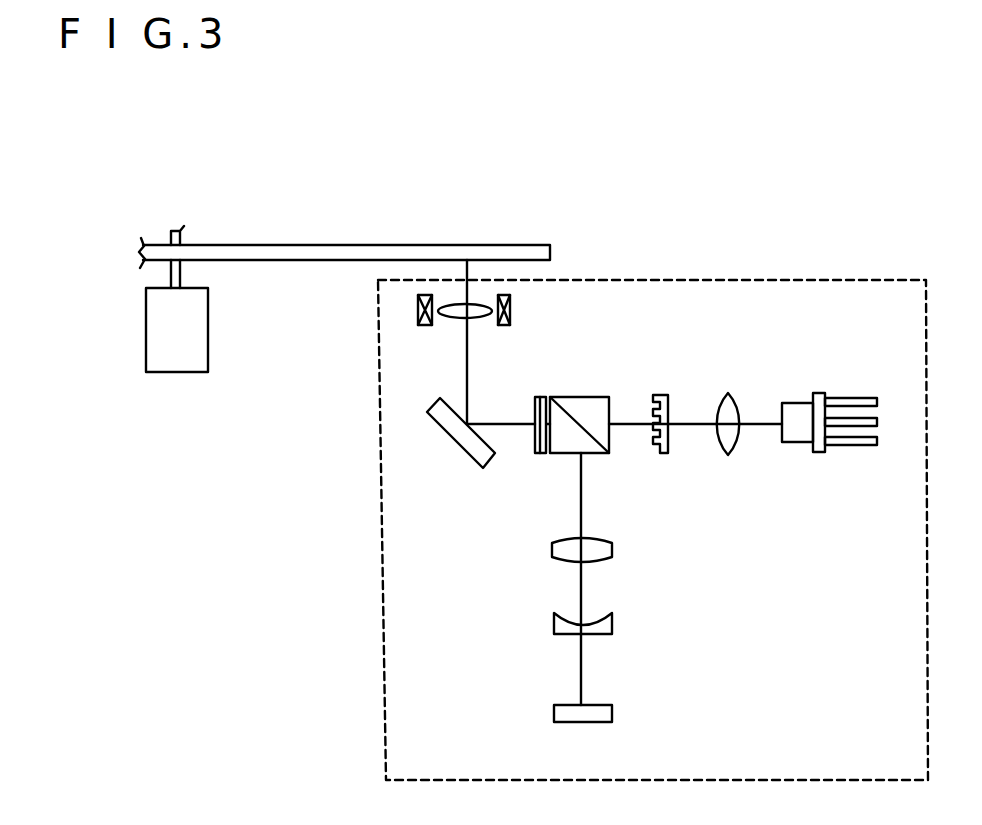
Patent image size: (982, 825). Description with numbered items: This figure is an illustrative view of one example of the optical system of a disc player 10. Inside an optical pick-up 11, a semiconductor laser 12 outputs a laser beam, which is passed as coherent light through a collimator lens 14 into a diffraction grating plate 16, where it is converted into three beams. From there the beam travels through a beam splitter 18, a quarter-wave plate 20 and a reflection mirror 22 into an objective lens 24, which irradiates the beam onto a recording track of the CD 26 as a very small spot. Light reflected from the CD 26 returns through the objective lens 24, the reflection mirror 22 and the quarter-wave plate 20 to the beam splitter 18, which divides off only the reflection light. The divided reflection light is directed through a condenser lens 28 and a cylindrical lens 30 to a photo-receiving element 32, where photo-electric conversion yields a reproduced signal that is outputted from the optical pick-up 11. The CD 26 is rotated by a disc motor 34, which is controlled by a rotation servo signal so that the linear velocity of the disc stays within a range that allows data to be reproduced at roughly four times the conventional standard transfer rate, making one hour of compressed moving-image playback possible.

The disc player 10 is at (744, 202).
The optical pick-up 11 is at (833, 279).
The semiconductor laser 12 is at (795, 405).
The collimator lens 14 is at (727, 400).
The diffraction grating plate 16 is at (663, 395).
The beam splitter 18 is at (588, 397).
The λ/4 plate 20 is at (540, 397).
The reflection mirror 22 is at (462, 437).
The objective lens 24 is at (455, 313).
The CD 26 is at (360, 248).
The condenser lens 28 is at (607, 550).
The cylindrical lens 30 is at (612, 624).
The photo-receiving element 32 is at (612, 713).
The disc motor 34 is at (208, 340).